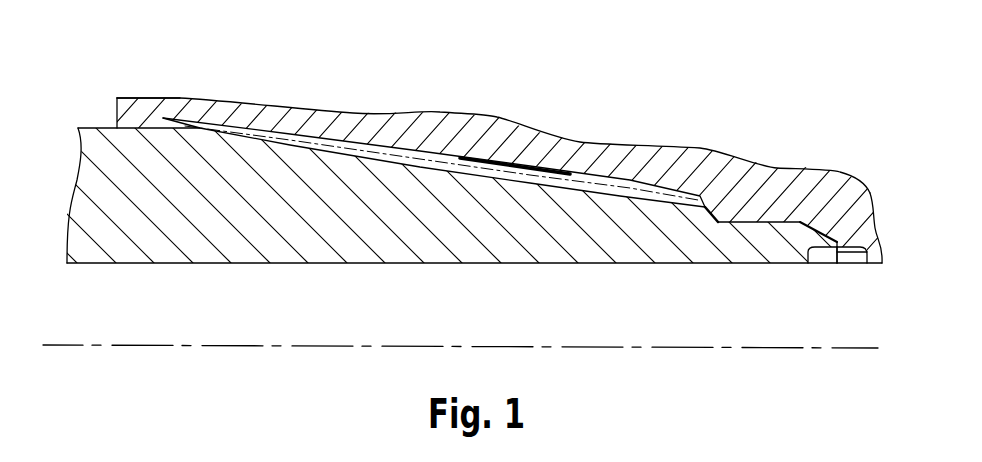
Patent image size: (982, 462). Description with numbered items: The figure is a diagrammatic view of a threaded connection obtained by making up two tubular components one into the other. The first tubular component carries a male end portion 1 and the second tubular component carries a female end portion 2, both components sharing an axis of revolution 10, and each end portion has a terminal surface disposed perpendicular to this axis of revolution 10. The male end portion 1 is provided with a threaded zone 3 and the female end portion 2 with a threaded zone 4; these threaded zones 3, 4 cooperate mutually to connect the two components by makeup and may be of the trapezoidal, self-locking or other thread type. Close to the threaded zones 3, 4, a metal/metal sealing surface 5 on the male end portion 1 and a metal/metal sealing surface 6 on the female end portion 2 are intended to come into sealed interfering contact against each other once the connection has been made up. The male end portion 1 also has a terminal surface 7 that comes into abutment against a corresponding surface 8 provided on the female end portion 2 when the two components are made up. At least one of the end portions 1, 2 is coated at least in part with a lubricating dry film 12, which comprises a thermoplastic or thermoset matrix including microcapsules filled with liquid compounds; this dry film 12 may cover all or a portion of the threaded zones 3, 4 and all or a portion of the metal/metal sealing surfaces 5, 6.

The male end portion 1 is at (165, 212).
The female end portion 2 is at (128, 107).
The threaded zone 3 is at (293, 150).
The threaded zone 4 is at (348, 133).
The metal/metal sealing surface 5 is at (752, 224).
The metal/metal sealing surface 6 is at (778, 220).
The terminal surface 7 is at (812, 265).
The corresponding surface 8 is at (862, 265).
The axis of revolution 10 is at (790, 348).
The dry film 12 is at (547, 172).